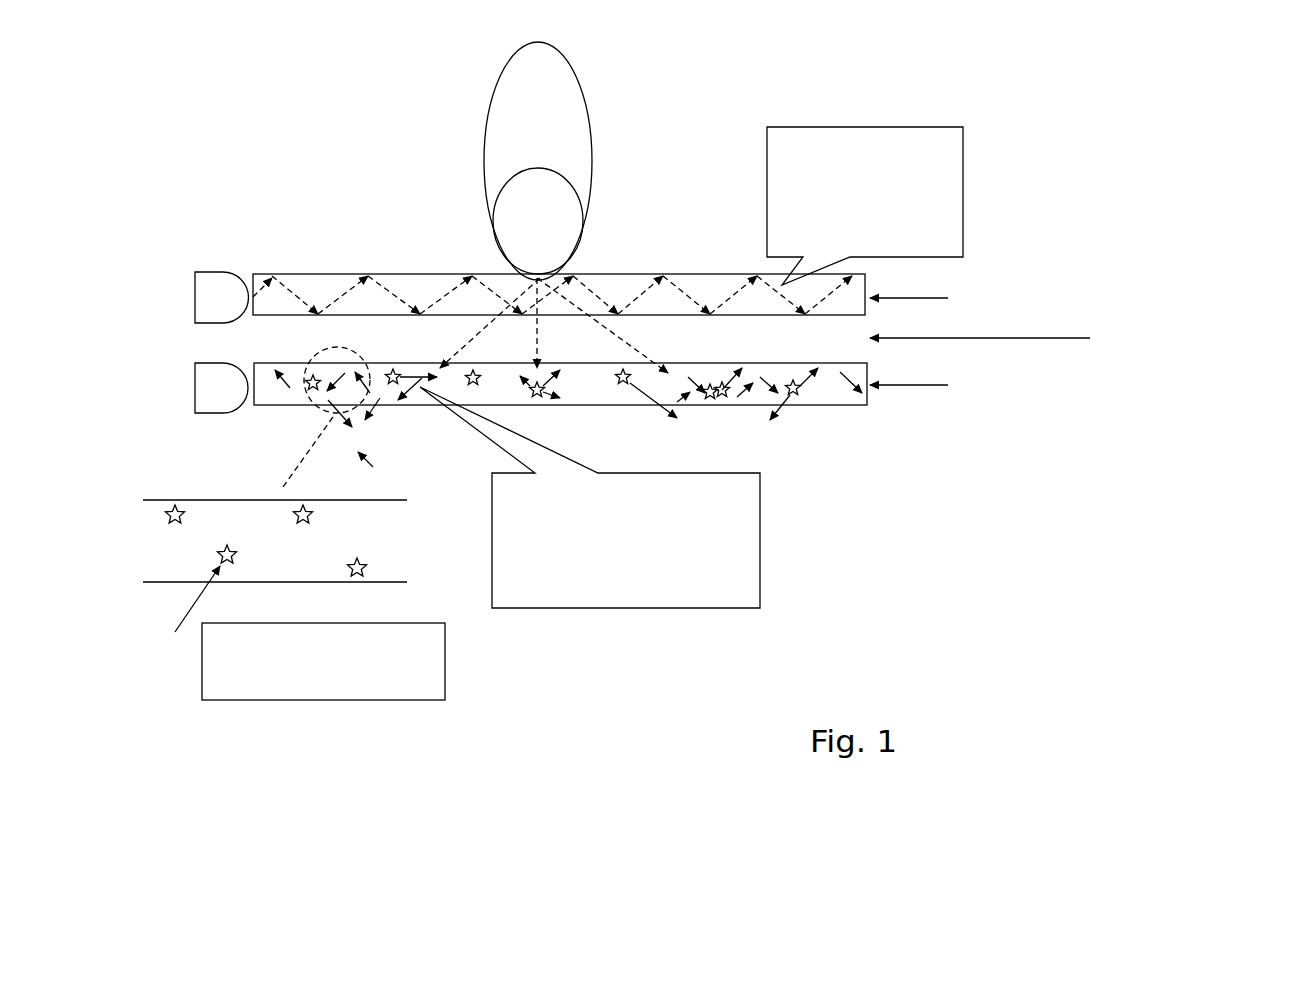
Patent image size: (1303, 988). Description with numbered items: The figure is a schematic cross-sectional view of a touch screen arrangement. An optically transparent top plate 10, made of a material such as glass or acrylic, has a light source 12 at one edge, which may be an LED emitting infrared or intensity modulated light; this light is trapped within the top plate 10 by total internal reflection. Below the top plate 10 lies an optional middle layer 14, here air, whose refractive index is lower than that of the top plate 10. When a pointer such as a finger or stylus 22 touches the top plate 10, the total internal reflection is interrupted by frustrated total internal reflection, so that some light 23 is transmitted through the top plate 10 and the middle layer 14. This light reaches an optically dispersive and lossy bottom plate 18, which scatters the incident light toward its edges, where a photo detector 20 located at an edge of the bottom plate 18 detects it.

The optically transparent top plate 10 is at (862, 307).
The light source 12 is at (223, 287).
The middle layer 14 is at (1090, 338).
The bottom plate 18 is at (832, 393).
The photo detector 20 is at (223, 397).
The finger or stylus 22 is at (565, 230).
The light 23 is at (617, 337).